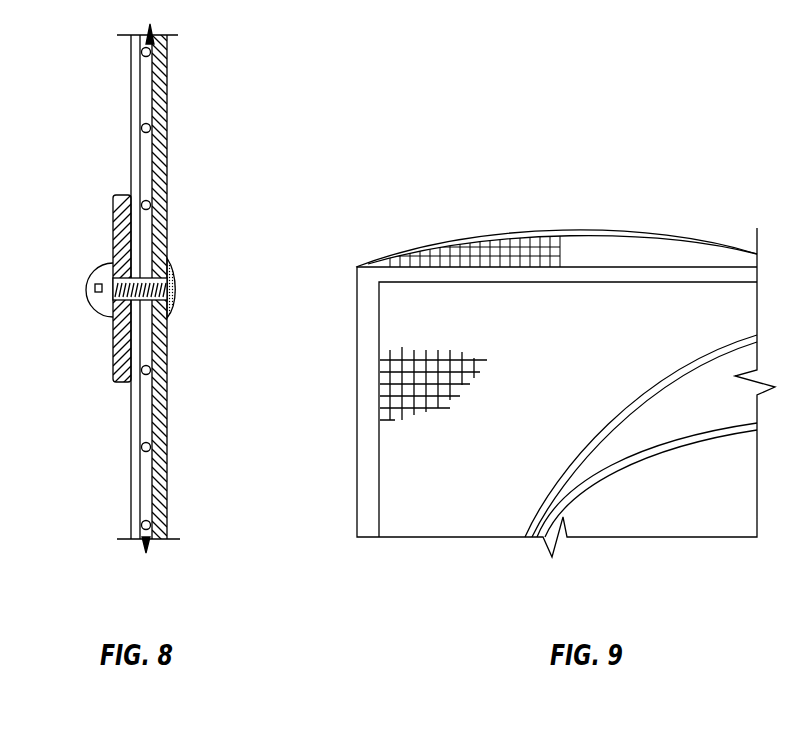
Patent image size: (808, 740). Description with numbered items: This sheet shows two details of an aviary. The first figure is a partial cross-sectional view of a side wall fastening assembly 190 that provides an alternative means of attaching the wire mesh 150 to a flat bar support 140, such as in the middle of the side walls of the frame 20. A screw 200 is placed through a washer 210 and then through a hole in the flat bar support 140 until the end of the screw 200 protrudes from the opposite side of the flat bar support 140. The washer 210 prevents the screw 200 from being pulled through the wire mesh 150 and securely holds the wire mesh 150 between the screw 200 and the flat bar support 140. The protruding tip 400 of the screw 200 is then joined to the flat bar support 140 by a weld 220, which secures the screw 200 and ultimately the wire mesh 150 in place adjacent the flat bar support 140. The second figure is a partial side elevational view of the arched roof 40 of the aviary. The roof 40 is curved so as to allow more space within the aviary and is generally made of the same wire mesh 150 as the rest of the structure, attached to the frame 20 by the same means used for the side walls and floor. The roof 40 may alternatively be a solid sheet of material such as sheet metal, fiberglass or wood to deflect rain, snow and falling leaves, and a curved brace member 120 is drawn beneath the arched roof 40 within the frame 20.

In FIG. 8, the panel mounting assembly 190 is at (212, 67).
In FIG. 8, the wire mesh 150 is at (134, 77).
In FIG. 8, the flat bar support 140 is at (158, 88).
In FIG. 8, the washer 210 is at (121, 356).
In FIG. 8, the screw 200 is at (103, 300).
In FIG. 8, the weld 220 is at (177, 297).
In FIG. 8, the tip of the screw 400 is at (180, 279).
In FIG. 9, the frame 20 is at (365, 463).
In FIG. 9, the roof 40 is at (523, 236).
In FIG. 9, the curved brace 120 is at (642, 398).